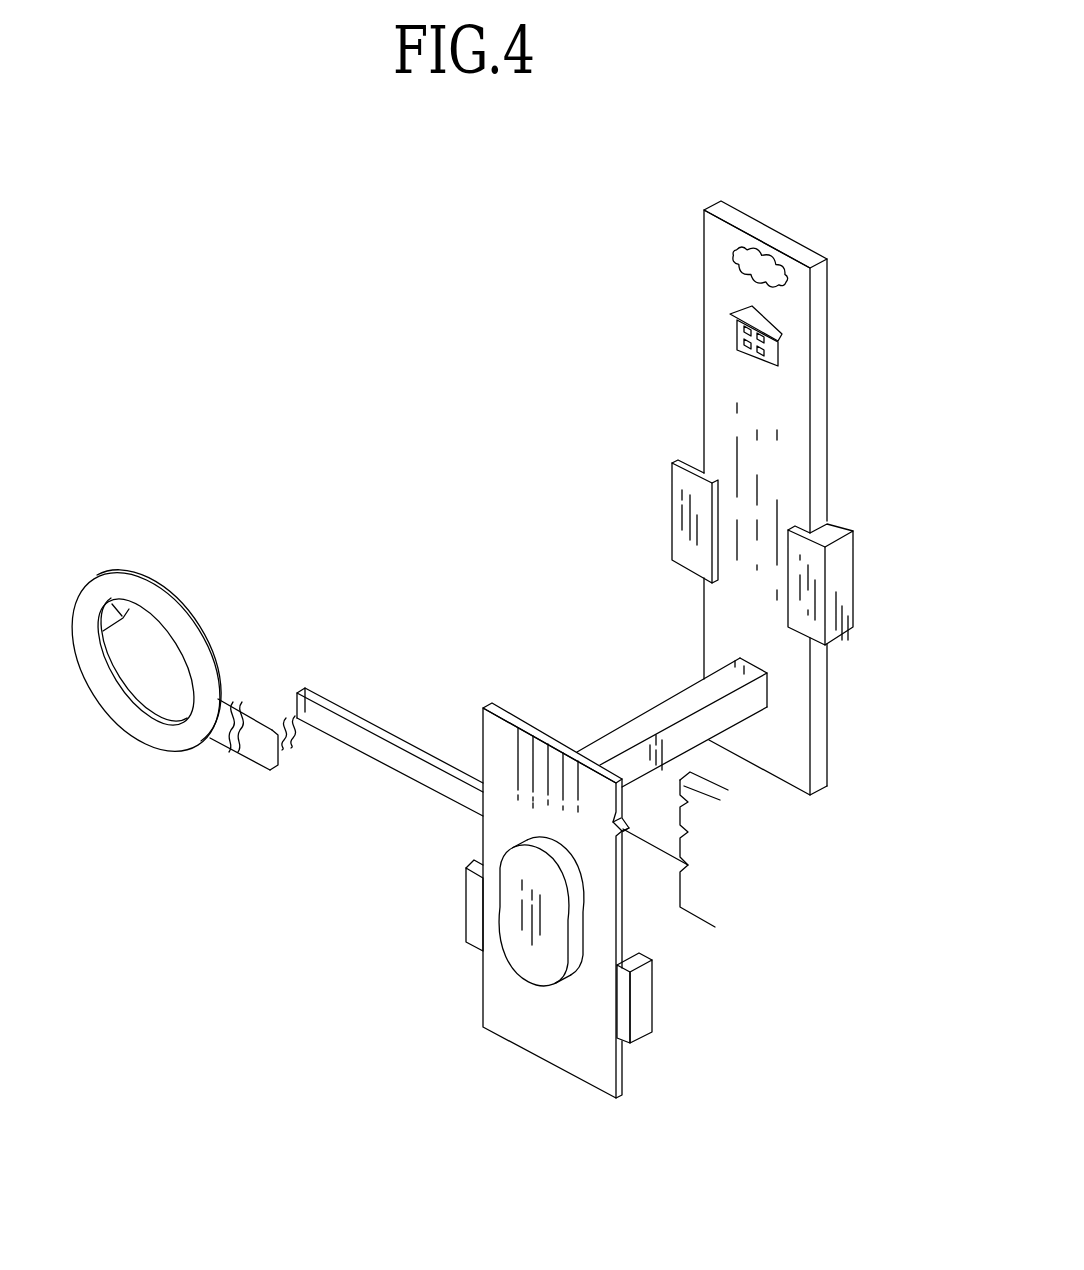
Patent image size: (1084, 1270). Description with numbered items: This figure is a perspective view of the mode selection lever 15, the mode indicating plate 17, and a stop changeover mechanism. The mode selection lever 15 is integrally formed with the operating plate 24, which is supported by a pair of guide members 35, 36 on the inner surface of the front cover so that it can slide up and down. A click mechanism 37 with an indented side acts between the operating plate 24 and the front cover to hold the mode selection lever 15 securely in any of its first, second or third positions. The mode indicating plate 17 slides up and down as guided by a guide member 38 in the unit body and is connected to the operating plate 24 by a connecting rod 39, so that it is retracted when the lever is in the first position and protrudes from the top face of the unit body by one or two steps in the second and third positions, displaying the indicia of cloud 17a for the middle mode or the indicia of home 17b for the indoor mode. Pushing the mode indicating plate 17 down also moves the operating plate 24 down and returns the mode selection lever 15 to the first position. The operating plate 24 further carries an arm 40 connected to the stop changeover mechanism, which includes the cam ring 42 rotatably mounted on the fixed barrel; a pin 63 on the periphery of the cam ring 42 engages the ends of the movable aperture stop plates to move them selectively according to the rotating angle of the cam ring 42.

The mode selection lever 15 is at (530, 950).
The mode indicating plate 17 is at (832, 340).
The indicia of cloud 17a is at (727, 252).
The indicia of home 17b is at (735, 336).
The operating plate 24 is at (565, 1027).
The guide member 35 is at (643, 1007).
The guide member 36 is at (467, 912).
The click mechanism 37 is at (724, 848).
The guide member 38 is at (840, 557).
The connecting rod 39 is at (640, 727).
The arm 40 is at (387, 753).
The cam ring 42 is at (119, 740).
The pin 63 is at (121, 612).